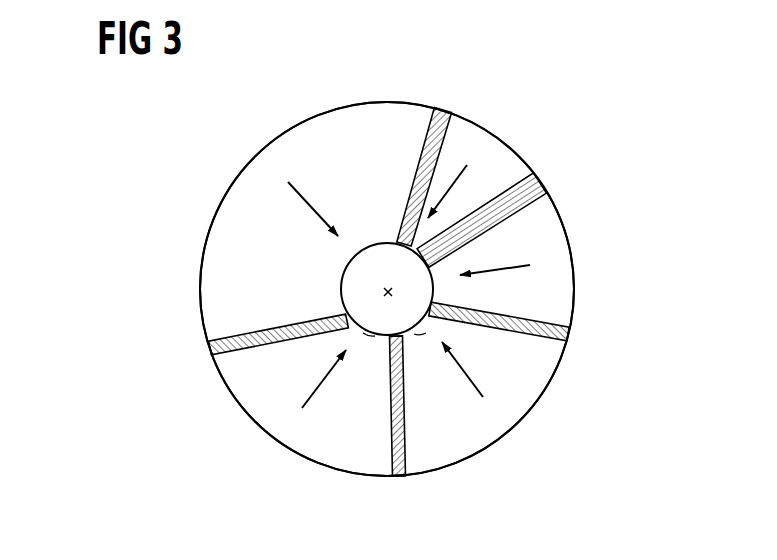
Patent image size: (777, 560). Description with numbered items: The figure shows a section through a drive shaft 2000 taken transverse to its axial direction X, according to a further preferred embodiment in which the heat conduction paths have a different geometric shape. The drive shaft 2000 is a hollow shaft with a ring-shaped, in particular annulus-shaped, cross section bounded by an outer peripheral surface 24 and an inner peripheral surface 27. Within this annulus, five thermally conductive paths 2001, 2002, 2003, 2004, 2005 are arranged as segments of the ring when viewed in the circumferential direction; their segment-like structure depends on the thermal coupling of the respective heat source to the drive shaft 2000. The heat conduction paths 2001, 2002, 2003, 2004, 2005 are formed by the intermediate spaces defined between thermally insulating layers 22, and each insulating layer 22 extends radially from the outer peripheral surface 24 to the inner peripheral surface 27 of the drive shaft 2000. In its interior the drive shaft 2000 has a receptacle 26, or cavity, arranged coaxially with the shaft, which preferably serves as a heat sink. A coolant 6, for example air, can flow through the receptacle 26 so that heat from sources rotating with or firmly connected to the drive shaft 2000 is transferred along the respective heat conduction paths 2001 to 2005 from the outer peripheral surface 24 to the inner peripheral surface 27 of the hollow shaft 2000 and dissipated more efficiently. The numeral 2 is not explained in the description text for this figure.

The drive shaft 2000 is at (170, 197).
The housing 2 is at (528, 412).
The outer peripheral surface 24 is at (354, 106).
The thermally insulating layer 22 is at (446, 112).
The coolant 6 is at (345, 288).
The axial direction X is at (386, 286).
The receptacle 26 is at (366, 338).
The inner peripheral surface 27 is at (426, 336).
The heat conduction path 2001 is at (489, 146).
The heat conduction path 2002 is at (557, 242).
The heat conduction path 2003 is at (538, 372).
The heat conduction path 2004 is at (240, 402).
The heat conduction path 2005 is at (241, 184).